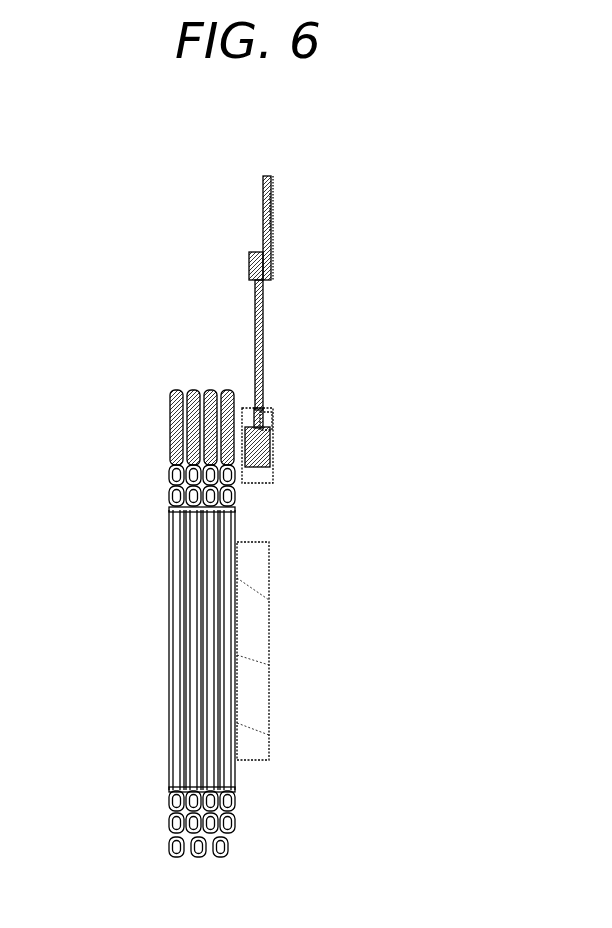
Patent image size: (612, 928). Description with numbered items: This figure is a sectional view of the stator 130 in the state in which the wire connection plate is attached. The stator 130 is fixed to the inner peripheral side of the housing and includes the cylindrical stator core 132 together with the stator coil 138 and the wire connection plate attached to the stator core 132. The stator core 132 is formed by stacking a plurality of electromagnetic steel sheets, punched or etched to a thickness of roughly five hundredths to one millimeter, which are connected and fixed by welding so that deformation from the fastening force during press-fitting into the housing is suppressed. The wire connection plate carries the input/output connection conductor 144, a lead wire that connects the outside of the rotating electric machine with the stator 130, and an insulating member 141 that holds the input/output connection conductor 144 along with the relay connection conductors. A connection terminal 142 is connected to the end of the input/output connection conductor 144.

The stator 130 is at (386, 243).
The stator core 132 is at (267, 665).
The stator coil 138 is at (169, 546).
The insulating member 141 is at (271, 478).
The connection terminal 142 is at (272, 178).
The input/output connection conductor 144 is at (263, 334).